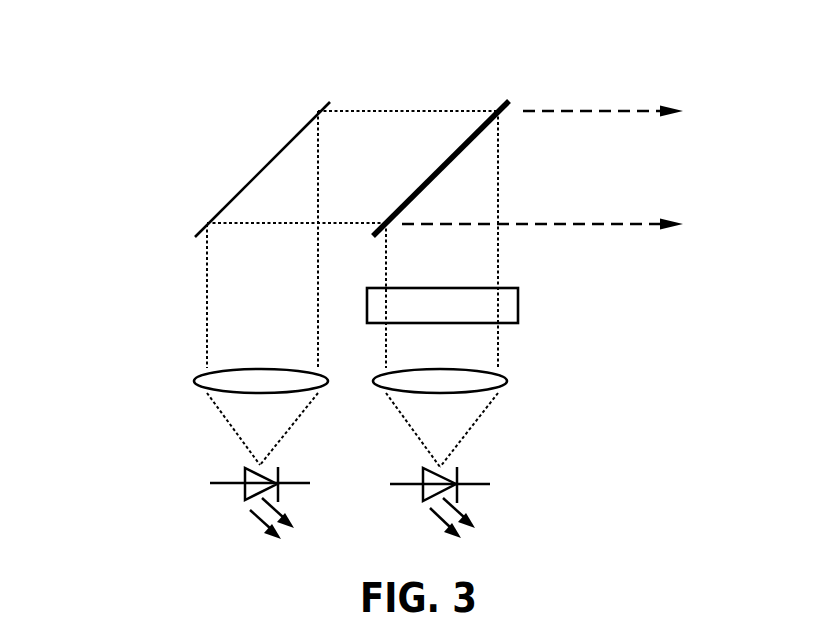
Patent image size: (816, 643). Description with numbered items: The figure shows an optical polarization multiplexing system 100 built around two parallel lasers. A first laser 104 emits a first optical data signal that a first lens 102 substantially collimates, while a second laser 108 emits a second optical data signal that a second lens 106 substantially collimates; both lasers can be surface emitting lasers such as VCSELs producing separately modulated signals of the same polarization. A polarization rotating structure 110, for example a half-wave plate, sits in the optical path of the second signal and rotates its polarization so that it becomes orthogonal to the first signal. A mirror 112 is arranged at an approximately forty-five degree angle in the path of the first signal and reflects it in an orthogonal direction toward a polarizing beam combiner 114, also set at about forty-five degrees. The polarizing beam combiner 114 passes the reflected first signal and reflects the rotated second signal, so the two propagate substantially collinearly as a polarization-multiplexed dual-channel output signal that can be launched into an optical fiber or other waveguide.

The optical polarization multiplexing system 100 is at (114, 74).
The first lens 102 is at (198, 374).
The first laser 104 is at (243, 473).
The second lens 106 is at (502, 374).
The second laser 108 is at (423, 473).
The polarization rotating structure 110 is at (518, 304).
The mirror 112 is at (282, 146).
The polarizing beam combiner 114 is at (498, 105).